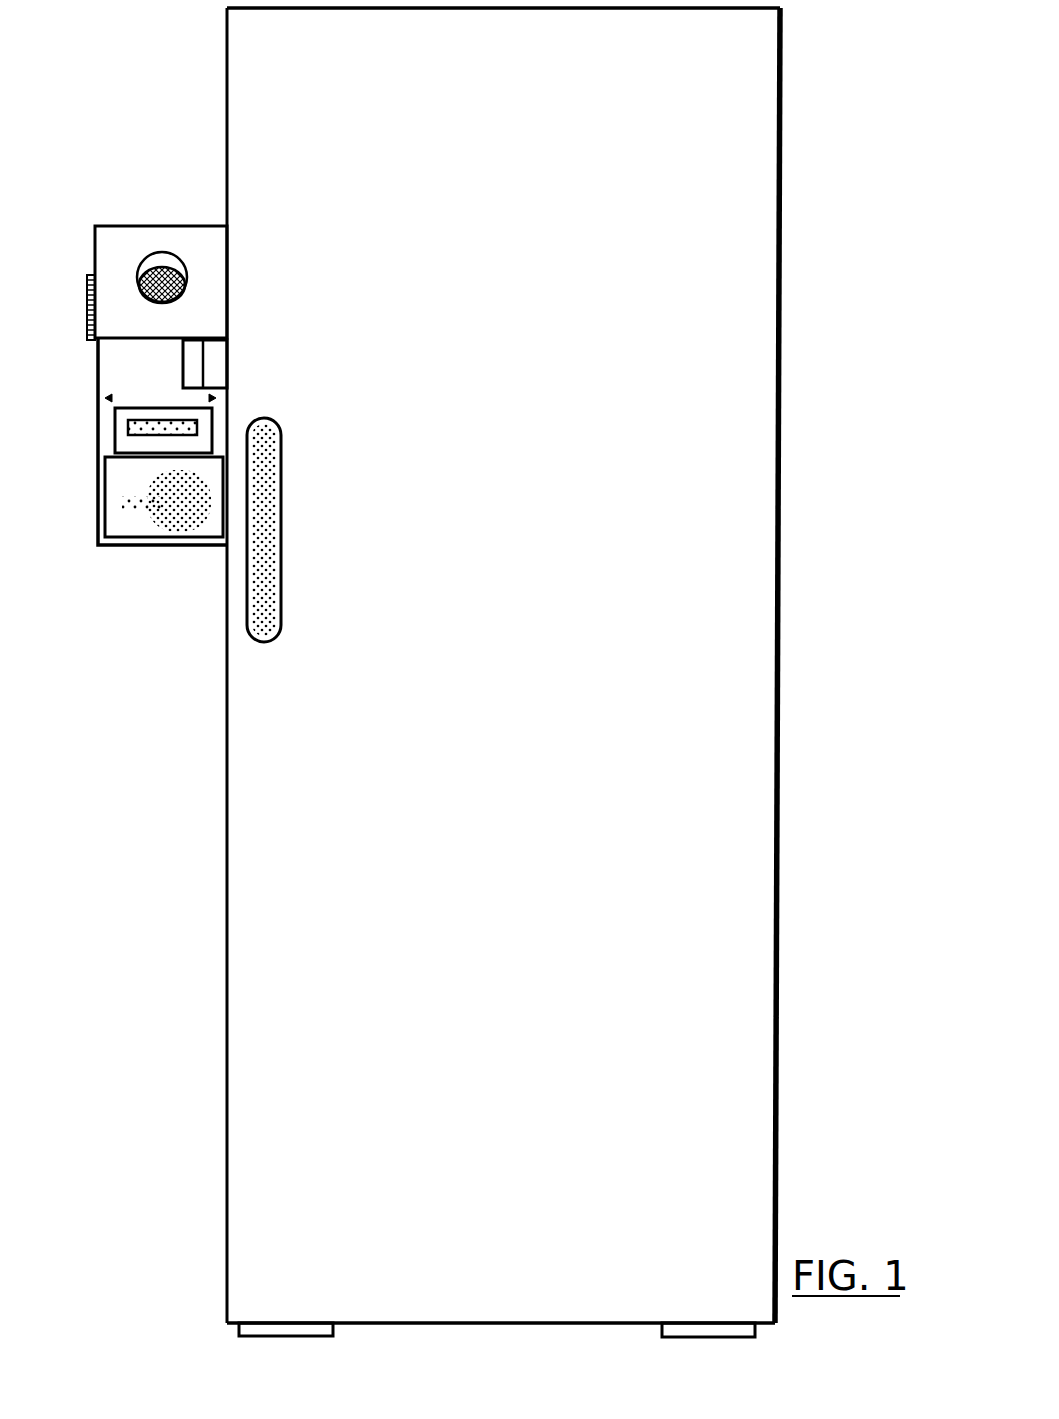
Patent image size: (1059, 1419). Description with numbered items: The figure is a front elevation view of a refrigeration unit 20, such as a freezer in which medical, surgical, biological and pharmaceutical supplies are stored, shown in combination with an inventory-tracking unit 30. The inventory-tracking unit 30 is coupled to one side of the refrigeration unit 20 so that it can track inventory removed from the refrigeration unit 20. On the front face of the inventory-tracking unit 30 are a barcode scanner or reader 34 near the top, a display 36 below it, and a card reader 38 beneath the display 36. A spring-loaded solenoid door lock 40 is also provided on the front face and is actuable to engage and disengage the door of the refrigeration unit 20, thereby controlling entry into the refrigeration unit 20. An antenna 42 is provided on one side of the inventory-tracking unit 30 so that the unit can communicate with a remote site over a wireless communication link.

The refrigeration unit 20 is at (516, 464).
The inventory-tracking unit 30 is at (131, 122).
The barcode scanner or reader 34 is at (166, 262).
The display 36 is at (196, 428).
The card reader 38 is at (177, 520).
The spring-loaded solenoid door lock 40 is at (217, 368).
The antenna 42 is at (87, 316).